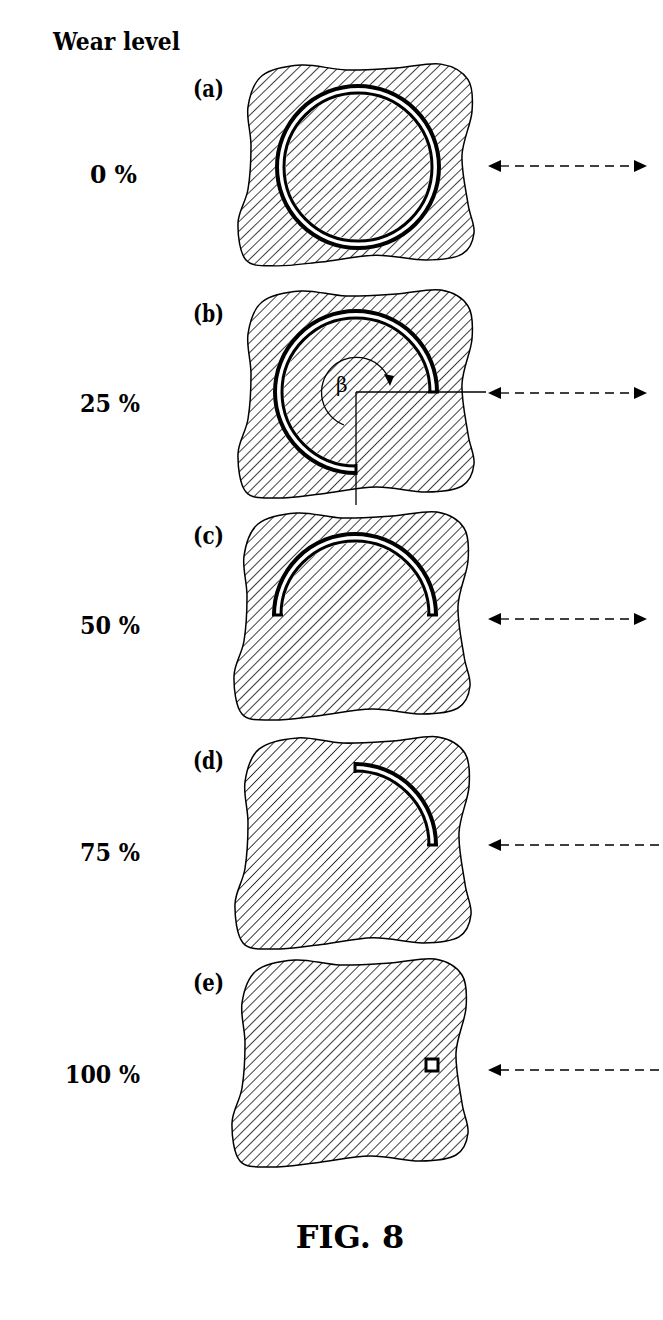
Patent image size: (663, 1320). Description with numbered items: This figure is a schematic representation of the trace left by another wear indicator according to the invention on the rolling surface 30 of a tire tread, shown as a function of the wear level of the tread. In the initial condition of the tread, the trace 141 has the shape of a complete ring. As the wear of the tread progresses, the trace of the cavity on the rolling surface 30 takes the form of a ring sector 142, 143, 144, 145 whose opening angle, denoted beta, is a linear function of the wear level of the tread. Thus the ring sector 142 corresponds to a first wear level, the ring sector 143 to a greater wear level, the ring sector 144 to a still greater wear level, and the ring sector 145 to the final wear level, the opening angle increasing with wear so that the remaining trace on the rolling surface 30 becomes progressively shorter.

The rolling surface 30 is at (456, 305).
The trace 141 is at (432, 117).
The ring sector 142 is at (418, 342).
The ring sector 143 is at (415, 570).
The ring sector 144 is at (423, 802).
The ring sector 145 is at (438, 1058).